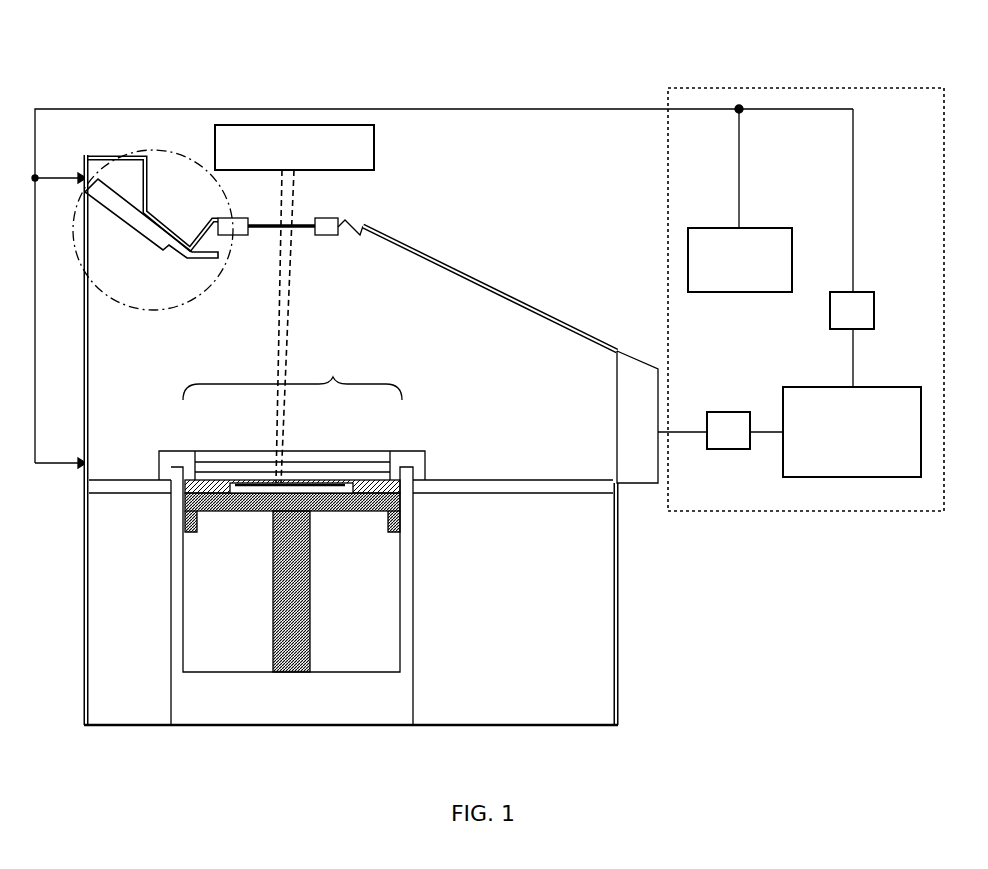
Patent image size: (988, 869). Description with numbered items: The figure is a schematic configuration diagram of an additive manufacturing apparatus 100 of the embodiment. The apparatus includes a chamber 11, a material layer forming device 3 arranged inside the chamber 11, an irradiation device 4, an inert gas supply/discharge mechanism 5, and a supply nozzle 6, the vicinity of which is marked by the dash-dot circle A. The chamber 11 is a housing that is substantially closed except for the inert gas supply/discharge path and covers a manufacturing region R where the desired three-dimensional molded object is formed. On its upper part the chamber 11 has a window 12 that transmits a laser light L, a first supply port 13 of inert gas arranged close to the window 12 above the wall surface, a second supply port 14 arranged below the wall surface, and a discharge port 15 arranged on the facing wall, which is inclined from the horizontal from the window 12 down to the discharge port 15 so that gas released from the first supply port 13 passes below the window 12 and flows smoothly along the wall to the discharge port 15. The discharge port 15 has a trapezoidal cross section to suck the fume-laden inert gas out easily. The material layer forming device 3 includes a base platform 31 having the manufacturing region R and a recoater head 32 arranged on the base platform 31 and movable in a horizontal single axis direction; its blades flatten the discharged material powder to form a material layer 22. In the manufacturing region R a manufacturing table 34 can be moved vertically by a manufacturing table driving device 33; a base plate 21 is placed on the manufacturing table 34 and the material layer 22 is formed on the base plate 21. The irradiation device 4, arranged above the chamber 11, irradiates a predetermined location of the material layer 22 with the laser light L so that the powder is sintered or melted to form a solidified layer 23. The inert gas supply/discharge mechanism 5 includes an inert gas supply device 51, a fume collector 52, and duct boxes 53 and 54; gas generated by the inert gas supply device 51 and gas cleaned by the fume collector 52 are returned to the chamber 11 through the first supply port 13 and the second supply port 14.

The additive manufacturing apparatus 100 is at (531, 43).
The material layer forming device 3 is at (420, 451).
The recoater head 32 is at (292, 465).
The irradiation device 4 is at (359, 141).
The inert gas supply/discharge mechanism 5 is at (905, 88).
The supply nozzle 6 is at (153, 235).
The chamber 11 is at (452, 272).
The window 12 is at (300, 222).
The first supply port 13 is at (83, 174).
The second supply port 14 is at (84, 441).
The discharge port 15 is at (620, 423).
The base plate 21 is at (340, 494).
The material layer 22 is at (323, 483).
The solidified layer 23 is at (250, 483).
The base platform 31 is at (495, 487).
The manufacturing table driving device 33 is at (297, 568).
The manufacturing table 34 is at (250, 508).
The inert gas supply device 51 is at (755, 228).
The fume collector 52 is at (880, 387).
The duct box 53 is at (726, 412).
The duct box 54 is at (872, 292).
The enlarged region A is at (218, 278).
The laser light L is at (288, 331).
The manufacturing region R is at (292, 377).